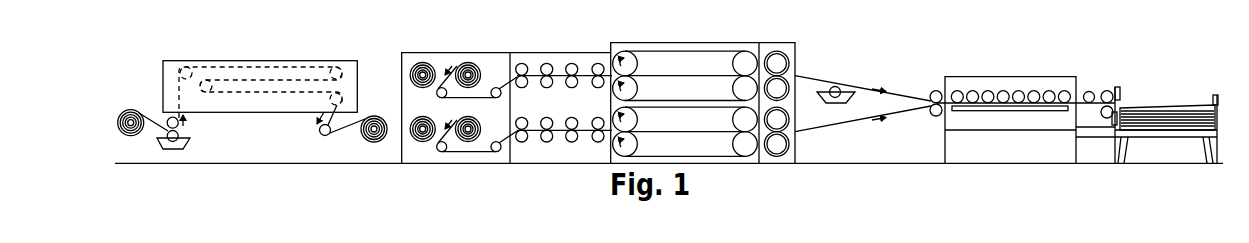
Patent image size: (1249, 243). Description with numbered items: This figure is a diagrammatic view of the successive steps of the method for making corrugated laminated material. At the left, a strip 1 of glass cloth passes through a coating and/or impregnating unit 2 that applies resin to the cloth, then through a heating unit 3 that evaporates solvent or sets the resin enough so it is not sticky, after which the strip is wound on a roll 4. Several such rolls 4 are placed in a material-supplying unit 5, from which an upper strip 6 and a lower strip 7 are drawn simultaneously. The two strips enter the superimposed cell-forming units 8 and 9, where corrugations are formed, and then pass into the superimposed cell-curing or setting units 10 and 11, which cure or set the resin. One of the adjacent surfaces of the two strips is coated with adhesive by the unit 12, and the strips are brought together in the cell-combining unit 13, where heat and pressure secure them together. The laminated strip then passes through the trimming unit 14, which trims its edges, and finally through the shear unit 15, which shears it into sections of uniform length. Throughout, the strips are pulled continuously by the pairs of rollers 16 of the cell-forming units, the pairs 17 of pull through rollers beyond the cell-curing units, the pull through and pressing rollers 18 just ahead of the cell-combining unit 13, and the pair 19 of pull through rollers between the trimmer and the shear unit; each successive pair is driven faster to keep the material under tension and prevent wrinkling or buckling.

The strip 1 is at (153, 128).
The coating and/or impregnating unit 2 is at (188, 142).
The heating unit 3 is at (277, 112).
The roll 4 is at (367, 141).
The material-supplying unit 5 is at (470, 53).
The upper strip 6 is at (530, 72).
The lower strip 7 is at (528, 138).
The cell-forming unit 8 is at (572, 63).
The cell-forming unit 9 is at (572, 142).
The cell-curing or setting unit 10 is at (713, 52).
The cell-curing or setting unit 11 is at (727, 153).
The adhesive coating unit 12 is at (838, 86).
The cell-combining unit 13 is at (990, 77).
The trimming unit 14 is at (1090, 91).
The shear unit 15 is at (1123, 88).
The pairs of rollers 16 is at (572, 84).
The pairs of pull through rollers 17 is at (788, 58).
The pull through and pressing rollers 18 is at (935, 91).
The pair of pull through rollers 19 is at (1111, 91).